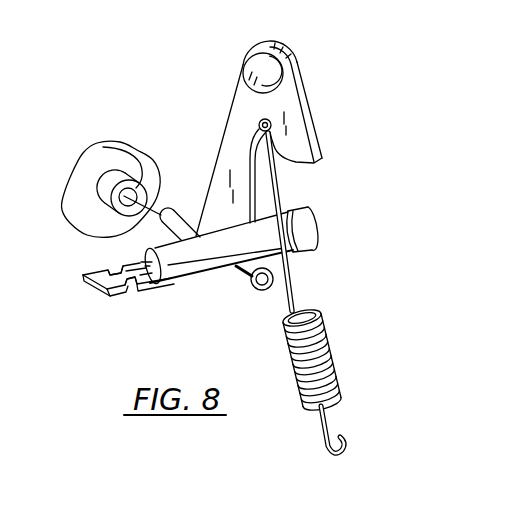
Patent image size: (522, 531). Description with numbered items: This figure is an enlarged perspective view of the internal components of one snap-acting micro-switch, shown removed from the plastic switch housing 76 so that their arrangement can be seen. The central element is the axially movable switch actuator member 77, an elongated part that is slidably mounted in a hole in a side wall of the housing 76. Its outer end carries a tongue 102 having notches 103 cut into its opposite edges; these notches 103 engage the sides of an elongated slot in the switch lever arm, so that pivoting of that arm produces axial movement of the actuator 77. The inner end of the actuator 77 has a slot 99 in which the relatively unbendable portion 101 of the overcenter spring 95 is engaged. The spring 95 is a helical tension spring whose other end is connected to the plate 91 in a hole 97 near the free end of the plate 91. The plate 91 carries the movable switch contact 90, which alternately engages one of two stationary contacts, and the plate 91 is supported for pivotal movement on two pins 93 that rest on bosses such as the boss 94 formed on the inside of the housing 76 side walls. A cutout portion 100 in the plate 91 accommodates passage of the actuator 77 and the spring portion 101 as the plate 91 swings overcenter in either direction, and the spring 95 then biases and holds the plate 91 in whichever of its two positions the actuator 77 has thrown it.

The switch housing 76 is at (108, 150).
The switch actuator member 77 is at (183, 270).
The movable switch contact 90 is at (252, 62).
The plate 91 is at (235, 97).
The pins 93 is at (175, 210).
The boss 94 is at (132, 180).
The overcenter spring 95 is at (325, 350).
The hole 97 is at (259, 125).
The slot 99 is at (293, 228).
The cutout portion 100 is at (250, 160).
The relatively unbendable portion 101 is at (297, 293).
The tongue 102 is at (92, 273).
The notches 103 is at (108, 268).